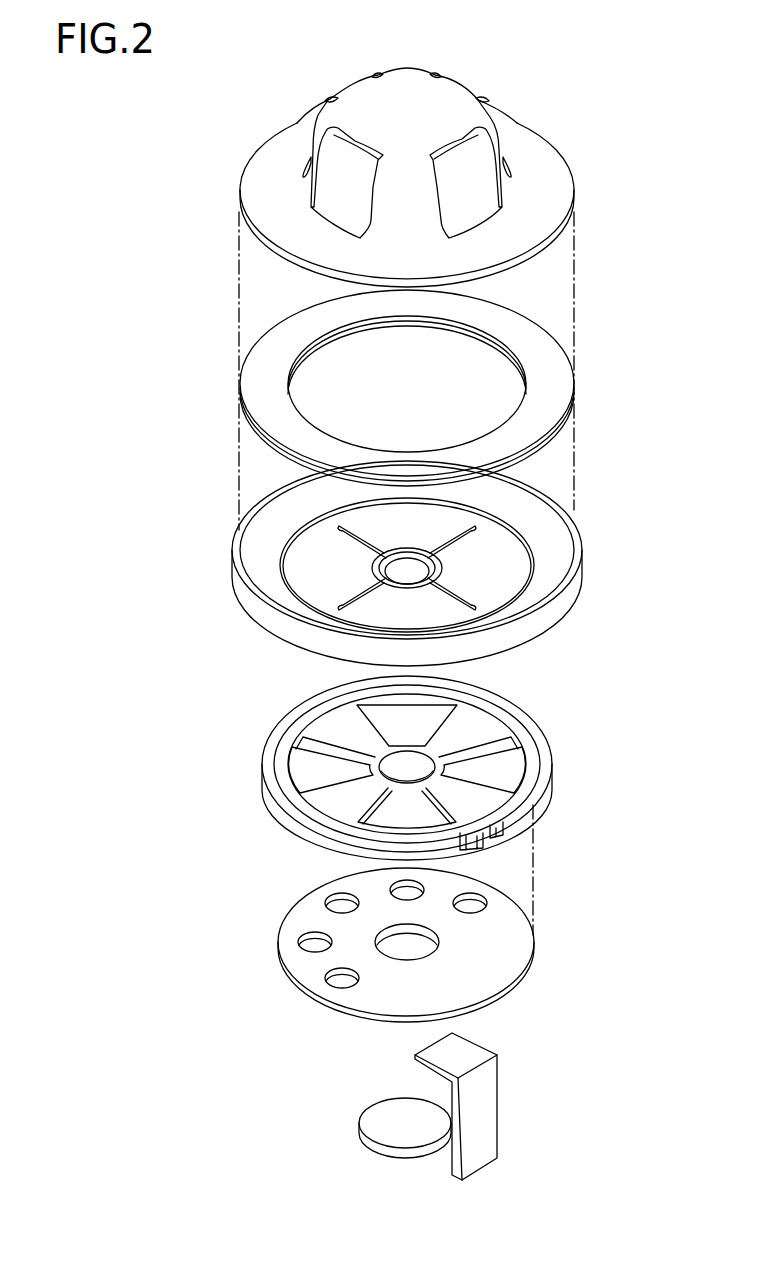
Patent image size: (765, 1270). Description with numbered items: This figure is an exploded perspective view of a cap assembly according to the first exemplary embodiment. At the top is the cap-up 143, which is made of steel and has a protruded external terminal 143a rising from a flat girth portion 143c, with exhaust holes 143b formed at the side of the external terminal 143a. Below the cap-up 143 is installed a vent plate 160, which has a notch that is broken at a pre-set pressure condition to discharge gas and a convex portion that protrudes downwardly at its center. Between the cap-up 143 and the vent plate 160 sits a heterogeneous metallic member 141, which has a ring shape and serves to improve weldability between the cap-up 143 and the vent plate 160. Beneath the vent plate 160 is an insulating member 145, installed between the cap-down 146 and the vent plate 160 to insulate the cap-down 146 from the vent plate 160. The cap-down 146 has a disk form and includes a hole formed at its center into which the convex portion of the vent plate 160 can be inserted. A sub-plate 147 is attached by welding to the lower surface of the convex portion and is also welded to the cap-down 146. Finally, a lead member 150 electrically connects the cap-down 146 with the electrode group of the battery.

The heterogeneous metallic member 141 is at (540, 357).
The cap-up 143 is at (450, 162).
The external terminal 143a is at (437, 107).
The exhaust holes 143b is at (467, 203).
The flat girth portion 143c is at (522, 140).
The insulating member 145 is at (537, 742).
The cap-down 146 is at (512, 928).
The sub-plate 147 is at (378, 1118).
The lead member 150 is at (485, 1095).
The vent plate 160 is at (553, 490).